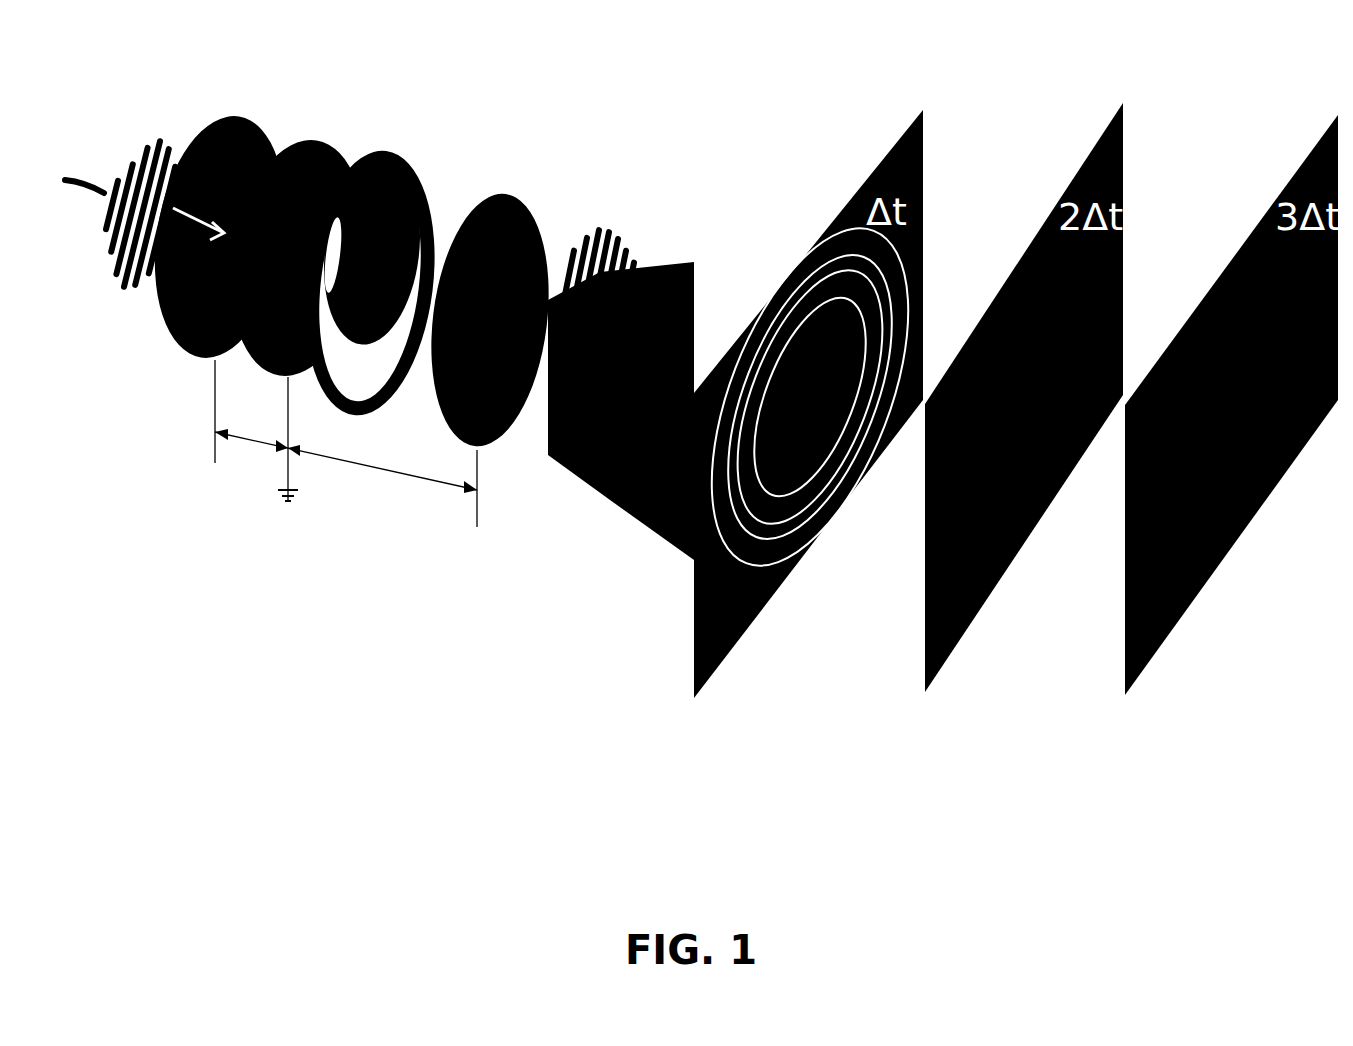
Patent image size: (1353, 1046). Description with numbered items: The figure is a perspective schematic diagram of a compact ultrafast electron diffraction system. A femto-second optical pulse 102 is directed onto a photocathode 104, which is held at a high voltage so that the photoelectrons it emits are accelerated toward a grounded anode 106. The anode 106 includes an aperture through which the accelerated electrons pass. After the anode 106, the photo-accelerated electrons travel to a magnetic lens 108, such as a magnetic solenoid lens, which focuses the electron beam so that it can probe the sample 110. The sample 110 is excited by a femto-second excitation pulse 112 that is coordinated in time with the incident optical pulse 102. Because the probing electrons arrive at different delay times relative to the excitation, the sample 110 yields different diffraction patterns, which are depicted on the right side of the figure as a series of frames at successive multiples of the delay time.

The femto-second optical pulse 102 is at (125, 150).
The photocathode 104 is at (215, 165).
The anode 106 is at (285, 192).
The magnetic lens 108 is at (445, 245).
The sample 110 is at (483, 215).
The femto-second excitation pulse 112 is at (591, 240).